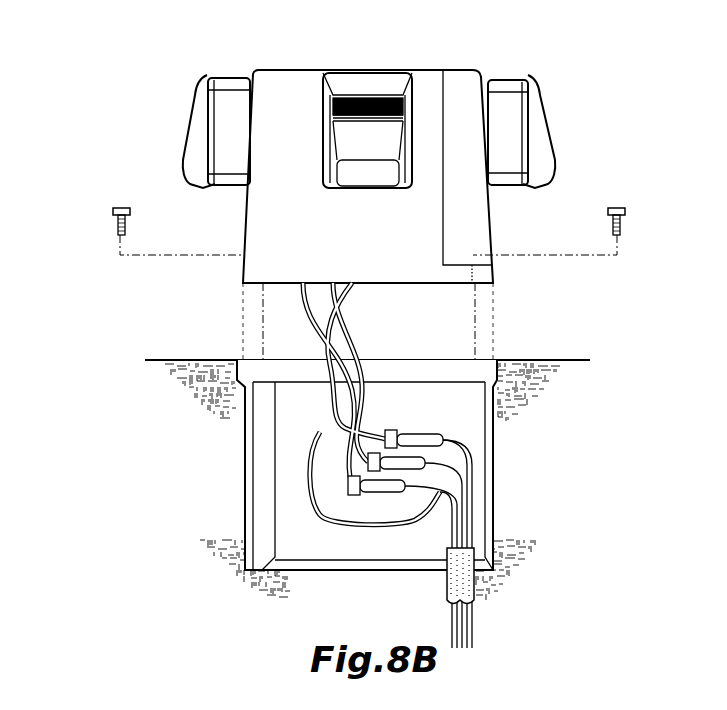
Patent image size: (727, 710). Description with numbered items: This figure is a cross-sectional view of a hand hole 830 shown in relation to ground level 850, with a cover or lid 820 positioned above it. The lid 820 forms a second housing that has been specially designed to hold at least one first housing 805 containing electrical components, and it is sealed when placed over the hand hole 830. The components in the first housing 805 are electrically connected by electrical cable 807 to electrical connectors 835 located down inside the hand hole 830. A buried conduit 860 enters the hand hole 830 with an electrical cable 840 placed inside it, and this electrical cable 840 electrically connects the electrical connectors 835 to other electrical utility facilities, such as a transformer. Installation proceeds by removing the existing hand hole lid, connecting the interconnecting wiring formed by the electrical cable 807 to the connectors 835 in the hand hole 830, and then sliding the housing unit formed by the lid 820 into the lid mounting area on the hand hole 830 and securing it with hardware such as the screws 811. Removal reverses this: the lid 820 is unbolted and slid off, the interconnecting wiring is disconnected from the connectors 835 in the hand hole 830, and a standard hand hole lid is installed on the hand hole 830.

The first housing 805 is at (370, 80).
The electrical cable 807 is at (355, 337).
The screws 811 is at (113, 210).
The lid 820 is at (483, 225).
The hand hole 830 is at (249, 480).
The electrical connectors 835 is at (352, 458).
The electrical cable 840 is at (475, 628).
The ground level 850 is at (536, 360).
The buried conduit 860 is at (447, 588).